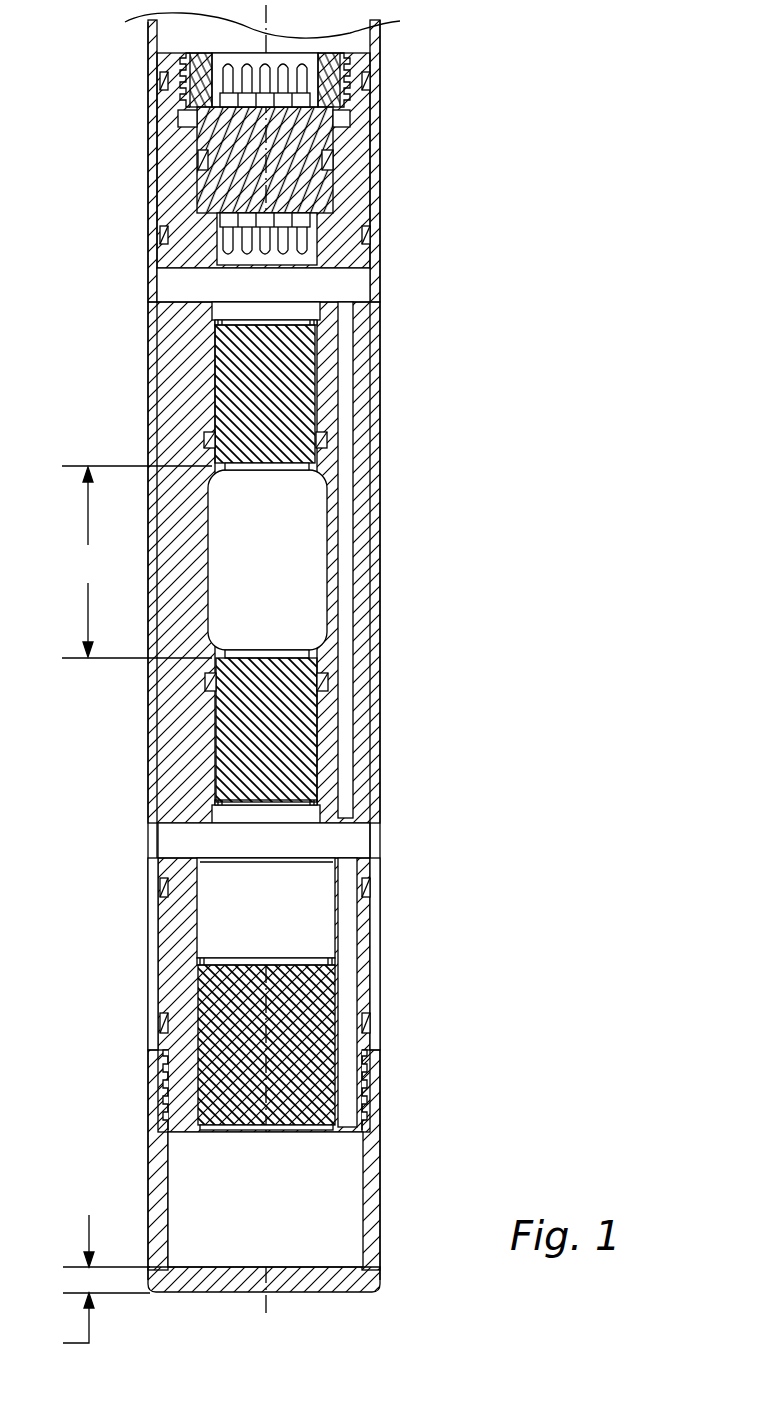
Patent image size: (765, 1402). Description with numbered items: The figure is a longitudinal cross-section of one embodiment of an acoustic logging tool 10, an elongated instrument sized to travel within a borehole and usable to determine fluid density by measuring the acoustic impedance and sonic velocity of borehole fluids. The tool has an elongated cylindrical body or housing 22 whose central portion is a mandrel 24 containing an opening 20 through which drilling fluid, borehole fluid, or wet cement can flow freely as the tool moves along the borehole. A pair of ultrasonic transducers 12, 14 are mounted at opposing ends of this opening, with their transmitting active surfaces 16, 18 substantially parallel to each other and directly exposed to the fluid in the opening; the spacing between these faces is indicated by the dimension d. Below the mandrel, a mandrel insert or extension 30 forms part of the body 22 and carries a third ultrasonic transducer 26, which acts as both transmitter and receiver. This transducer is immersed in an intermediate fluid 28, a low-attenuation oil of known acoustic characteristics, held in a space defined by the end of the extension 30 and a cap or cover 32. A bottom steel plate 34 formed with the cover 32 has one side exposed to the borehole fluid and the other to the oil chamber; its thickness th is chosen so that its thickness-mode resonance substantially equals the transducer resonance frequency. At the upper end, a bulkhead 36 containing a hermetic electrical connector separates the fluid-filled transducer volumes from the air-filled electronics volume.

The acoustic logging tool 10 is at (515, 428).
The ultrasonic transducer 12 is at (235, 387).
The ultrasonic transducer 14 is at (235, 744).
The transmitting active surface 16 is at (285, 472).
The transmitting active surface 18 is at (285, 594).
The opening 20 is at (292, 560).
The body or housing 22 is at (396, 730).
The mandrel 24 is at (380, 373).
The third ultrasonic transducer 26 is at (240, 1026).
The intermediate fluid 28 is at (240, 1168).
The mandrel insert or extension 30 is at (380, 980).
The cap or cover 32 is at (380, 1203).
The bottom steel plate 34 is at (343, 1293).
The bulkhead 36 is at (380, 163).
The magnet spacing dimension d is at (137, 562).
The end wall thickness th is at (93, 1286).